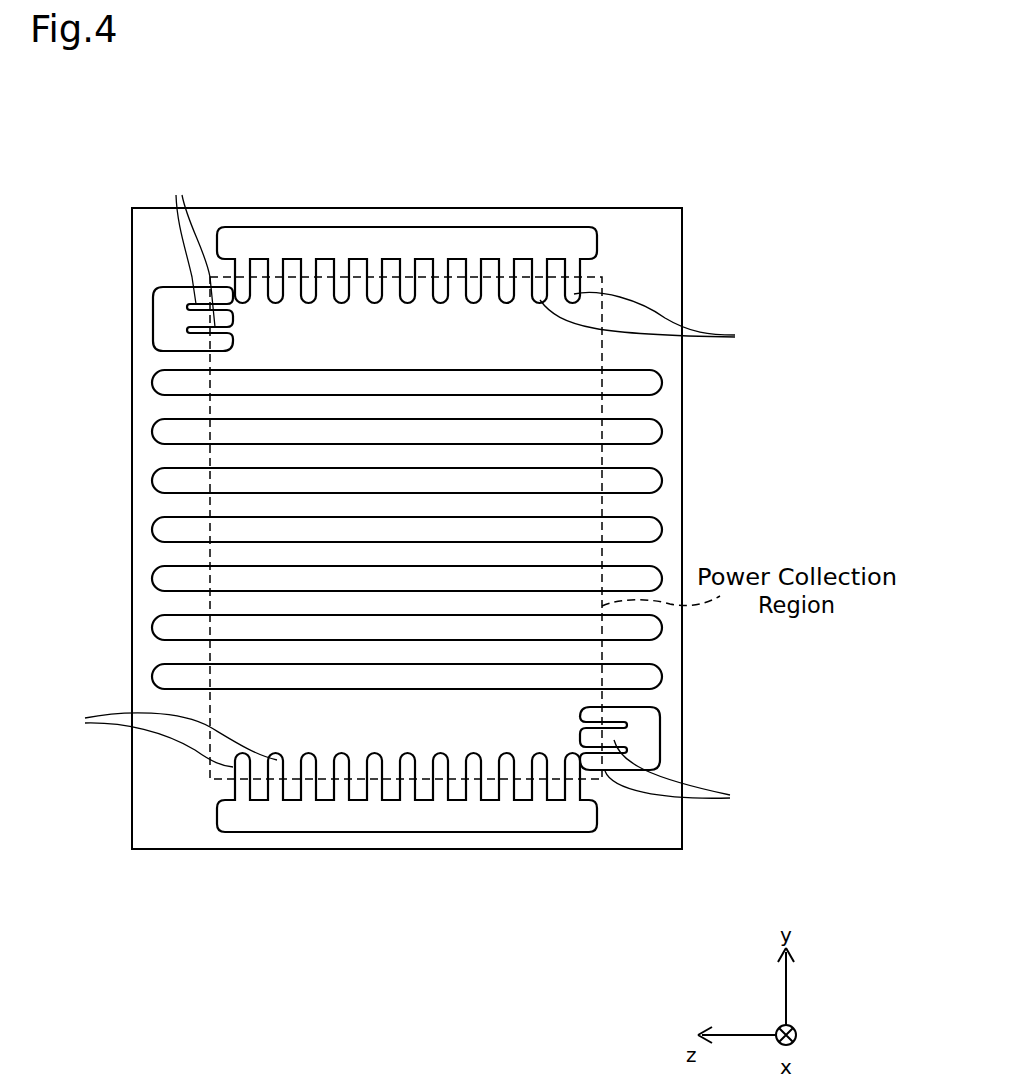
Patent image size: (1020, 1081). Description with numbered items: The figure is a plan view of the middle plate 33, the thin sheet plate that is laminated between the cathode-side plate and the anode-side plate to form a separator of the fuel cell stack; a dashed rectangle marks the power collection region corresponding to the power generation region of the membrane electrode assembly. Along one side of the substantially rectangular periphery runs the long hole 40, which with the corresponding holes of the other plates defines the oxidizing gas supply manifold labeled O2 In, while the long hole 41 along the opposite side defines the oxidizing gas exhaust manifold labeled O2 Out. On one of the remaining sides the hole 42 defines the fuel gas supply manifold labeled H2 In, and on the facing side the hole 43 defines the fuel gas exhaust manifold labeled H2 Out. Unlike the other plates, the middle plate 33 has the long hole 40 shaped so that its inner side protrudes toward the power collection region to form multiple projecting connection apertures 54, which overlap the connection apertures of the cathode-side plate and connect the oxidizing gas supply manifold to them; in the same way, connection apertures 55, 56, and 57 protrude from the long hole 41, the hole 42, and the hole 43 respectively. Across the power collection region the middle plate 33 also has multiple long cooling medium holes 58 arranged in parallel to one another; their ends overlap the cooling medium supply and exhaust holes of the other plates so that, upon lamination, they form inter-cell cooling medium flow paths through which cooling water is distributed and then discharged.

The middle plate 33 is at (642, 171).
The long hole 40 is at (252, 238).
The long hole 41 is at (268, 820).
The hole 42 is at (157, 291).
The hole 43 is at (655, 709).
The connection apertures 54 is at (651, 322).
The connection apertures 55 is at (163, 737).
The connection apertures 56 is at (188, 247).
The connection apertures 57 is at (684, 775).
The cooling medium holes 58 is at (648, 529).